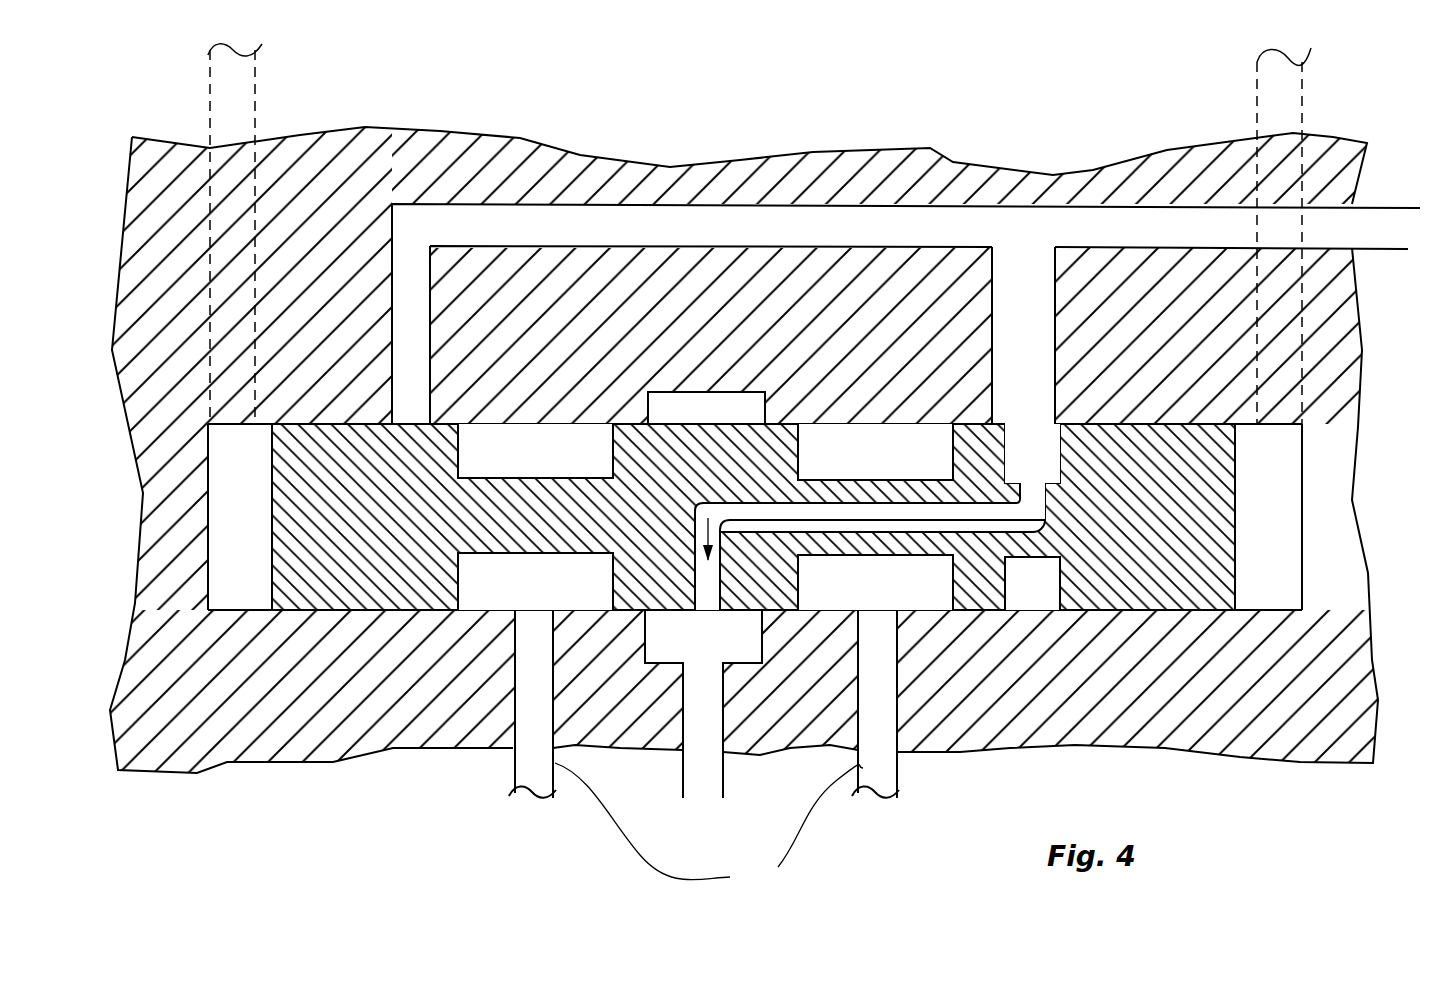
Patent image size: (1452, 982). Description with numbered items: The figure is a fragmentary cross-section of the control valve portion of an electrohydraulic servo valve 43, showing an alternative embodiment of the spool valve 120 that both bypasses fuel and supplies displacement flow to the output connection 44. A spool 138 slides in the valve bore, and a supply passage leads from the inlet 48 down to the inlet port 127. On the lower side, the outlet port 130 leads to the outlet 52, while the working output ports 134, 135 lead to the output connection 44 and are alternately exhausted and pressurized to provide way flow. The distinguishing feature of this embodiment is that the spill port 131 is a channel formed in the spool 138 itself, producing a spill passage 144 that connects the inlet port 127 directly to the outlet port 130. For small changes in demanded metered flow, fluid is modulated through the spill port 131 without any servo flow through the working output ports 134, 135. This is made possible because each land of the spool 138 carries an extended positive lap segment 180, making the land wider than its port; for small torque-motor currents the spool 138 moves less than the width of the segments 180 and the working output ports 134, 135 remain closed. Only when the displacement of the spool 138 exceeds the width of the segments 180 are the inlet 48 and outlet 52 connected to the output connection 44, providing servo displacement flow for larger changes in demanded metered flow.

The electrohydraulic servo valve 43 is at (377, 780).
The output connection 44 is at (709, 824).
The inlet 48 is at (1400, 231).
The outlet 52 is at (703, 768).
The spool valve 120 is at (282, 622).
The inlet port 127 is at (1023, 443).
The outlet port 130 is at (736, 635).
The spill port 131 is at (910, 500).
The working output port 134 is at (533, 588).
The working output port 135 is at (878, 596).
The spool 138 is at (507, 514).
The spill passage 144 is at (870, 521).
The extended positive lap segment 180 is at (447, 413).